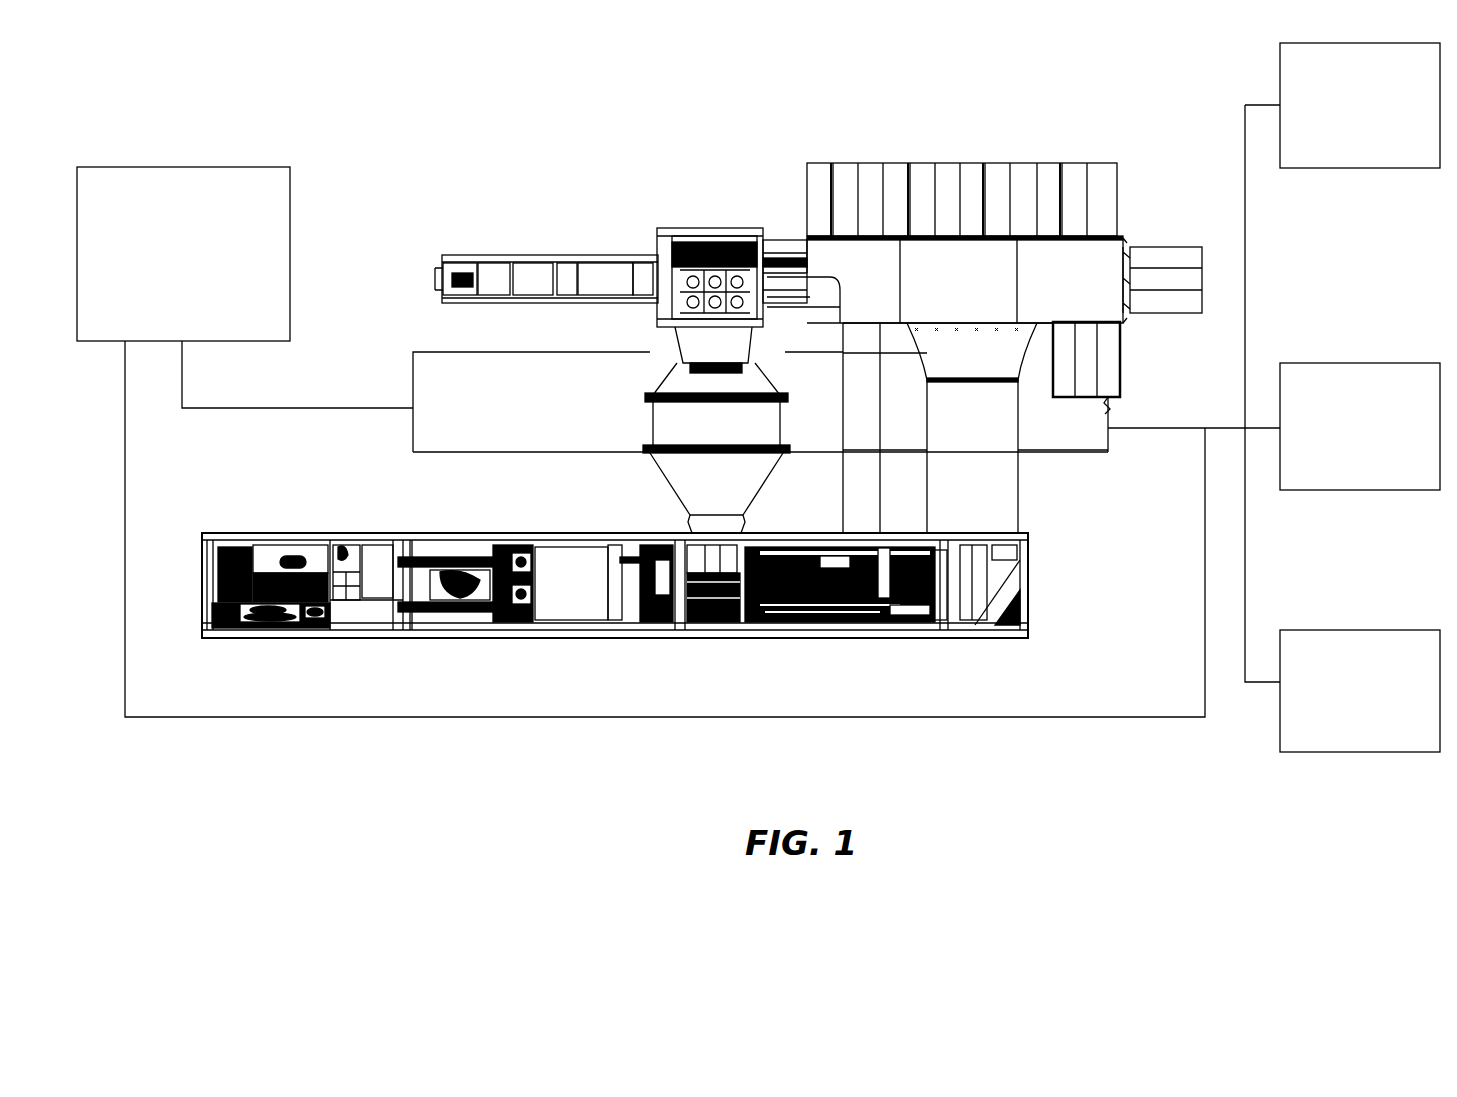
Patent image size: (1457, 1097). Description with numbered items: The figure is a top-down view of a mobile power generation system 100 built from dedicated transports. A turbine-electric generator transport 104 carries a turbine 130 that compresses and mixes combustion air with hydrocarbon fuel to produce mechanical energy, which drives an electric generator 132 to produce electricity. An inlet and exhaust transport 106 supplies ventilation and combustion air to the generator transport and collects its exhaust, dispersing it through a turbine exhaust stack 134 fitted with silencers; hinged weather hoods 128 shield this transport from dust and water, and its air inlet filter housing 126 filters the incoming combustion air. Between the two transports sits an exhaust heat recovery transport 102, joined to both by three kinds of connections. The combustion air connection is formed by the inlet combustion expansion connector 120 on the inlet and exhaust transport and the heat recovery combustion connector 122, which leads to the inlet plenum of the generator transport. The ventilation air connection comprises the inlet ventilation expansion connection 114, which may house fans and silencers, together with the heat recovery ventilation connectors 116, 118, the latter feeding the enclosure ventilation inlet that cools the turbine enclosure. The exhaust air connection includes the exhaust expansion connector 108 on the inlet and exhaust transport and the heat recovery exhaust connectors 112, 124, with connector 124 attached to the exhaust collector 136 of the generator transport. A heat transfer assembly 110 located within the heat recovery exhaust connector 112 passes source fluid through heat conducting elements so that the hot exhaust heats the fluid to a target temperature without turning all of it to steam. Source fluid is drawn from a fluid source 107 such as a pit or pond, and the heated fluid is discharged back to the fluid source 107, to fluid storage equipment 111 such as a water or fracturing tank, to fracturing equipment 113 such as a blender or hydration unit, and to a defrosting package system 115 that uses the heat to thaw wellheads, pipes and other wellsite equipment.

The mobile power generation system 100 is at (191, 106).
The exhaust heat recovery transport 102 is at (408, 375).
The turbine-electric generator transport 104 is at (615, 574).
The inlet and exhaust transport 106 is at (443, 240).
The fluid source 107 is at (198, 283).
The exhaust expansion connector 108 is at (681, 341).
The heat transfer assembly 110 is at (664, 421).
The fluid storage equipment 111 is at (1428, 138).
The heat recovery exhaust connector 112 is at (655, 372).
The fracturing equipment 113 is at (1428, 455).
The inlet ventilation expansion connection 114 is at (852, 412).
The defrosting package system 115 is at (1376, 738).
The heat recovery ventilation connector 116 is at (679, 243).
The heat recovery ventilation connector 118 is at (784, 344).
The inlet combustion expansion connector 120 is at (979, 342).
The heat recovery combustion connector 122 is at (1017, 503).
The heat recovery exhaust connector 124 is at (661, 488).
The air inlet filter housing 126 is at (967, 264).
The weather hoods 128 is at (1027, 209).
The turbine 130 is at (850, 606).
The electric generator 132 is at (578, 627).
The turbine exhaust stack 134 is at (676, 219).
The exhaust collector 136 is at (722, 632).